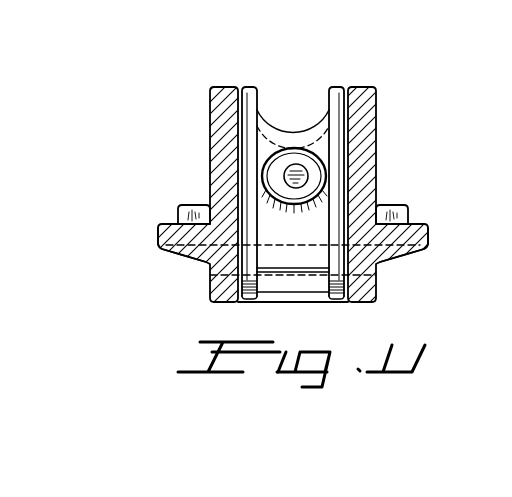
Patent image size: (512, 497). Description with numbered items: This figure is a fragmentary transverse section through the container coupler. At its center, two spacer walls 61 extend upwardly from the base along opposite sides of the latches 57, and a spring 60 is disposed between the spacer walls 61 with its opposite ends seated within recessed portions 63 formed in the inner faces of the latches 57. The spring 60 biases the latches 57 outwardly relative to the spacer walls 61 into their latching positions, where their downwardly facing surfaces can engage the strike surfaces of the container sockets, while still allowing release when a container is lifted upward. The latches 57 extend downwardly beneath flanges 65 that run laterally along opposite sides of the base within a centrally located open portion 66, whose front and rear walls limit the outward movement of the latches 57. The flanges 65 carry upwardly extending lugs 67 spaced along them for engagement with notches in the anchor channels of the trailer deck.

The latch 57 is at (249, 88).
The spring 60 is at (291, 148).
The spacer wall 61 is at (221, 119).
The recessed portion 63 is at (266, 149).
The flange 65 is at (160, 225).
The open portion 66 is at (241, 298).
The lug 67 is at (190, 205).